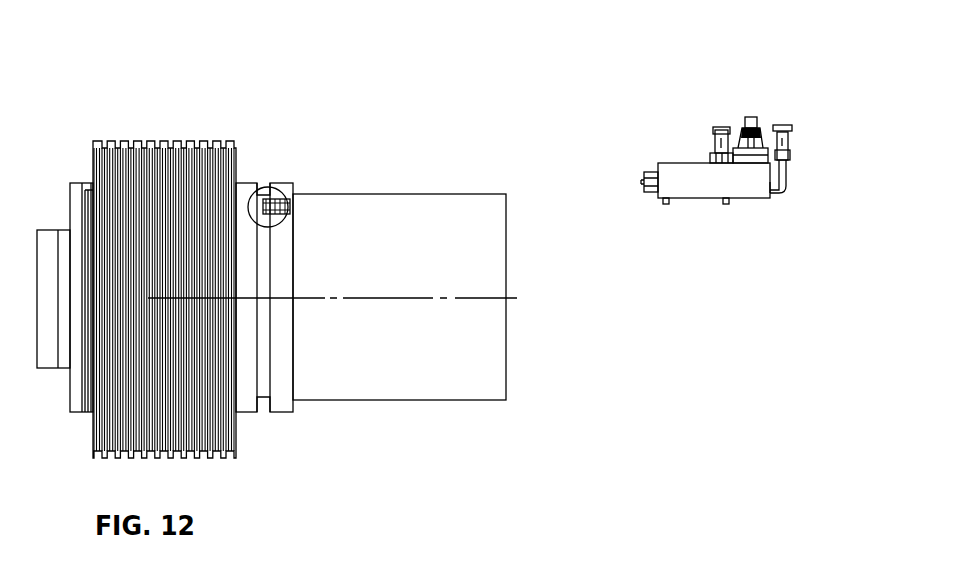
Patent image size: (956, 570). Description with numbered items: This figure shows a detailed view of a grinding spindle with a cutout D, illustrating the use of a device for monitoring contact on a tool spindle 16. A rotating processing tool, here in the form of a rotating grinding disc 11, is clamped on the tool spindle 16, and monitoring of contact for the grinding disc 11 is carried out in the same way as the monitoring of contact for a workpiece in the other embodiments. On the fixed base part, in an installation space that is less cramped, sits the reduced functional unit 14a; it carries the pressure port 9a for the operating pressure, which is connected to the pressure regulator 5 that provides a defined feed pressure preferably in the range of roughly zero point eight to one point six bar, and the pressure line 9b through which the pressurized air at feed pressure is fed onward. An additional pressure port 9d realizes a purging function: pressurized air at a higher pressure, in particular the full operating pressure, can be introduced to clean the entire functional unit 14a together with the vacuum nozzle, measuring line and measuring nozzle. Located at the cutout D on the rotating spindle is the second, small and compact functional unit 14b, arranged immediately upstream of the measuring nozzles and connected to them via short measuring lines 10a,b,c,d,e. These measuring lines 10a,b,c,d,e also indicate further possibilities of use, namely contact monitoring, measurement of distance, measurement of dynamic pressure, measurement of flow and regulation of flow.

The rotating grinding disc 11 is at (118, 178).
The second functional unit 14b is at (263, 192).
The measuring lines 10a,b,c,d,e is at (417, 63).
The tool spindle 16 is at (440, 240).
The functional unit 14a is at (727, 183).
The pressure line 9b is at (647, 195).
The additional pressure port 9d is at (723, 128).
The pressure regulator 5 is at (745, 160).
The pressure port 9a is at (788, 127).